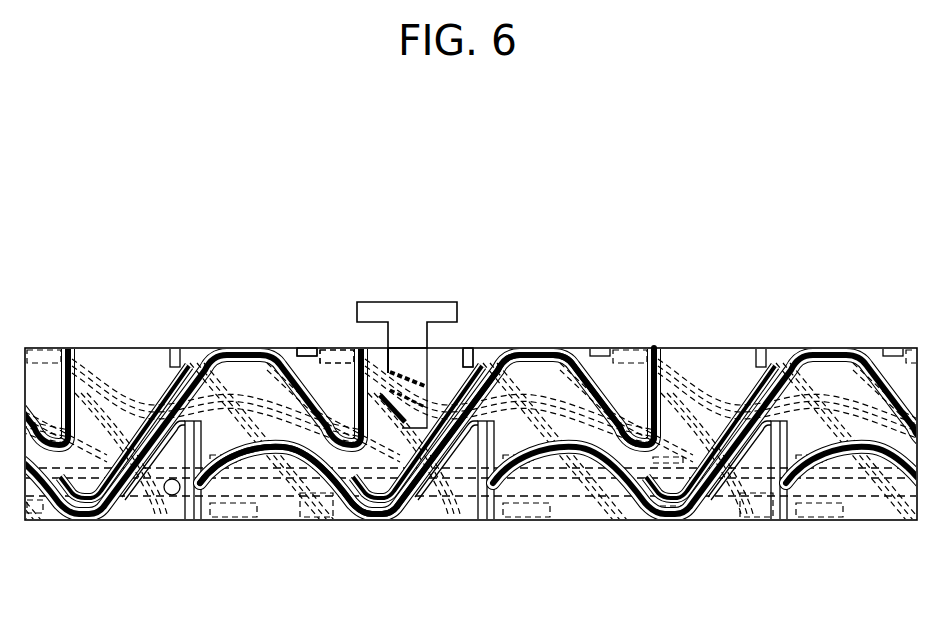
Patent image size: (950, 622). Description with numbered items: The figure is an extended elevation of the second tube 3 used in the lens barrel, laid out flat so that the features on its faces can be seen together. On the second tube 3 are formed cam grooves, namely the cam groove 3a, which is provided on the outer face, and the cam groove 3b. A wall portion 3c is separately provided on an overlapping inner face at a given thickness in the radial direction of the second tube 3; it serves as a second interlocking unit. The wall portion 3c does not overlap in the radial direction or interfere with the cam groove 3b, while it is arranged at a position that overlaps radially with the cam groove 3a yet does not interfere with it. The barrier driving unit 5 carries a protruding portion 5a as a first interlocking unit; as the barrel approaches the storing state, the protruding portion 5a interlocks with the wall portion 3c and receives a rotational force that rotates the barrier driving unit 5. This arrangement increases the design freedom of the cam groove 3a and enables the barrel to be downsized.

The second tube 3 is at (575, 505).
The cam groove 3a is at (330, 348).
The cam groove 3b is at (515, 348).
The wall portion 3c is at (427, 417).
The barrier driving unit 5 is at (433, 308).
The protruding portion 5a is at (390, 348).